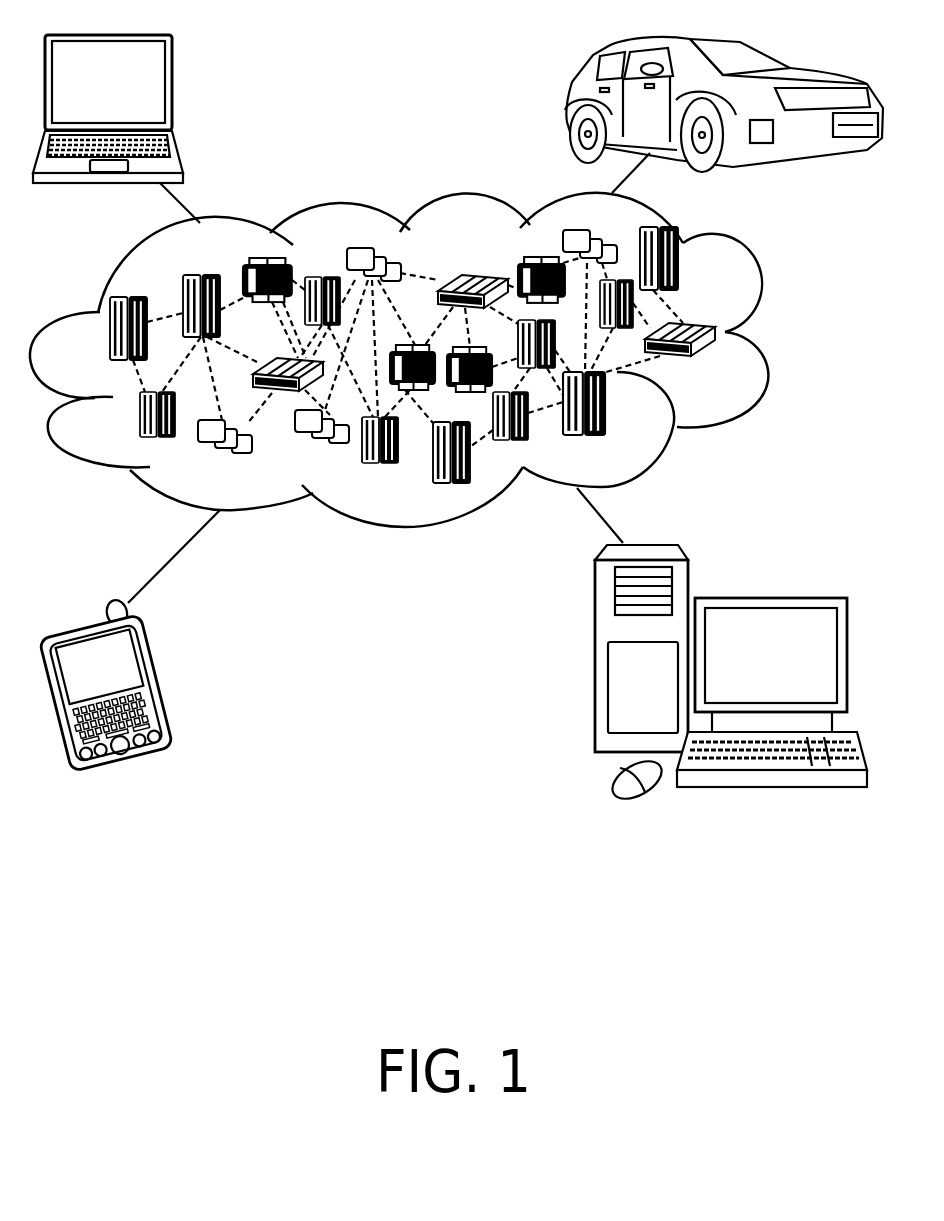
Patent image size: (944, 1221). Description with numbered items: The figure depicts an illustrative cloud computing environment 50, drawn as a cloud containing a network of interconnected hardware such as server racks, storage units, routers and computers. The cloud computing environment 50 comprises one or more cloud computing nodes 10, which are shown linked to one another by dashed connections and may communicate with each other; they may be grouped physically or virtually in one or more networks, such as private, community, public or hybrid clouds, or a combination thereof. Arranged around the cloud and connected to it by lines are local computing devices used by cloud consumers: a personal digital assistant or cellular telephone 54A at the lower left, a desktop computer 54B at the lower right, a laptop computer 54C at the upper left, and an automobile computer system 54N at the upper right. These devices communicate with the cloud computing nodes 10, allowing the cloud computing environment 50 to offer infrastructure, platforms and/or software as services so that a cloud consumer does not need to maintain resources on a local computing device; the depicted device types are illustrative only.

The laptop computer 54C is at (172, 91).
The automobile computer system 54N is at (570, 103).
The cloud computing environment 50 is at (768, 336).
The cloud computing nodes 10 is at (722, 364).
The personal digital assistant or cellular telephone 54A is at (163, 681).
The desktop computer 54B is at (770, 597).